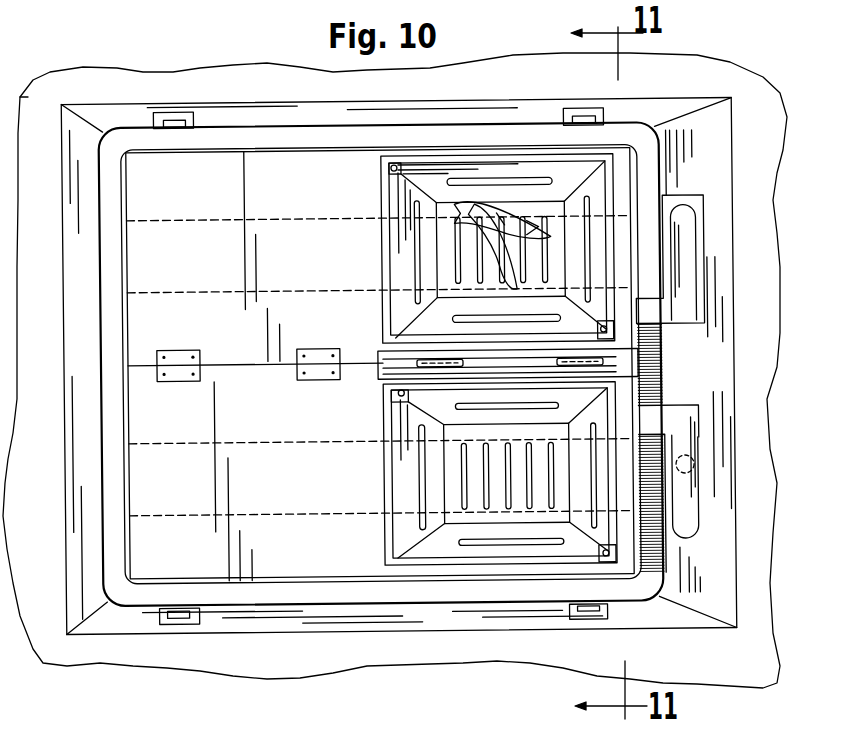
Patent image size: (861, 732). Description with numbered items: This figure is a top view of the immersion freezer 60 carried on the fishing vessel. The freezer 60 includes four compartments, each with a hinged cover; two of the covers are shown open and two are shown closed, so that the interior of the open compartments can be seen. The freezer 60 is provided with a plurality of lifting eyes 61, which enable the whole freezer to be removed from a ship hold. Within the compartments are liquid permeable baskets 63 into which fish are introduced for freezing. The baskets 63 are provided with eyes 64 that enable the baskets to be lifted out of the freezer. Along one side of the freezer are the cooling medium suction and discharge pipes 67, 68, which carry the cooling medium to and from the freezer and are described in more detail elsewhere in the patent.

The freezer 60 is at (250, 82).
The lifting eyes 61 is at (167, 112).
The liquid permeable baskets 63 is at (498, 170).
The eyes 64 is at (396, 164).
The cooling medium suction pipe 67 is at (700, 501).
The cooling medium discharge pipe 68 is at (682, 232).